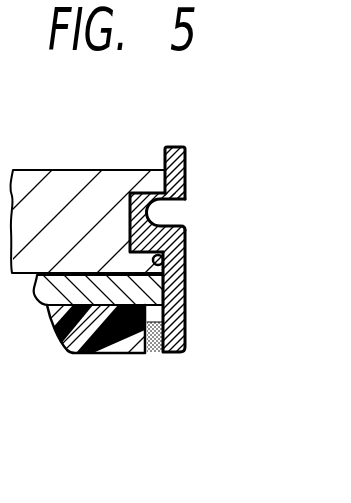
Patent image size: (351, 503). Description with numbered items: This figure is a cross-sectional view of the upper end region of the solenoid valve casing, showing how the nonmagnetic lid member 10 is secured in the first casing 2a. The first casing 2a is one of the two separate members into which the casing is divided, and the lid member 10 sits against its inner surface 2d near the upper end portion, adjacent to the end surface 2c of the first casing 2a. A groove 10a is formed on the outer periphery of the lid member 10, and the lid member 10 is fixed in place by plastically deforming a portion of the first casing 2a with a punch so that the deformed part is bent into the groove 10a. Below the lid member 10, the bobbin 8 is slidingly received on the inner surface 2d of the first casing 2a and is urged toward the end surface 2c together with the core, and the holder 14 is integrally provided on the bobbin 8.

The lid member 10 is at (117, 182).
The groove 10a is at (186, 188).
The end surface 2c is at (172, 146).
The inner surface 2d is at (186, 257).
The first casing 2a is at (172, 353).
The holder 14 is at (42, 302).
The bobbin 8 is at (150, 353).